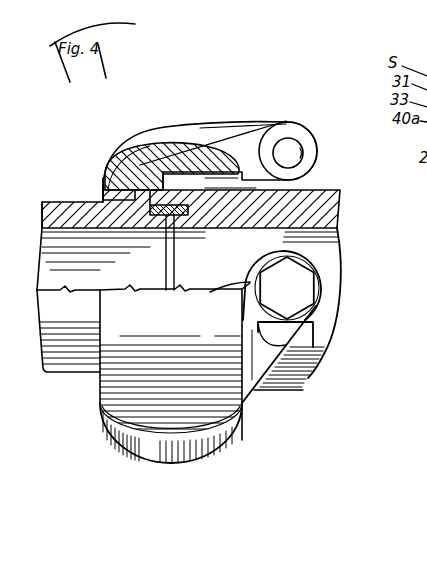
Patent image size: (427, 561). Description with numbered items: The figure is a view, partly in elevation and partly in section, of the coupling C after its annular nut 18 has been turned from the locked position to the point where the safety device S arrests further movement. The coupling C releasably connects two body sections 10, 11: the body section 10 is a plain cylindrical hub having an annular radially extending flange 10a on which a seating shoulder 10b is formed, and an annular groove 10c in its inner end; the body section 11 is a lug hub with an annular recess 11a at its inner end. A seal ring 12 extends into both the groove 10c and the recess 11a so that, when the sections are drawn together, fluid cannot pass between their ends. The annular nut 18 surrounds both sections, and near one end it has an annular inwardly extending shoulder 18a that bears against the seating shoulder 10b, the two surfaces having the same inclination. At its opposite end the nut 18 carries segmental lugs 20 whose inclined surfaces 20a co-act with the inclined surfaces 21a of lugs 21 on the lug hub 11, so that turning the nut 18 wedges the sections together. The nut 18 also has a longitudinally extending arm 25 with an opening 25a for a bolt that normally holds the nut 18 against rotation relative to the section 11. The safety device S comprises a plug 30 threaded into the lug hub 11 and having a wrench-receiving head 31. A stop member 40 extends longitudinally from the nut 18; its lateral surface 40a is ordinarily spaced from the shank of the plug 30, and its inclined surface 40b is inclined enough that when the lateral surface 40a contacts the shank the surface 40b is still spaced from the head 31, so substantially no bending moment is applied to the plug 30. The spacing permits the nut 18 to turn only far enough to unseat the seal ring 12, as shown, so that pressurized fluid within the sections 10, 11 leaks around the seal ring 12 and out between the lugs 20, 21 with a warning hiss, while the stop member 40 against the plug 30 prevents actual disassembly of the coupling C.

The body section 10 is at (62, 208).
The annular radially extending flange 10a is at (179, 140).
The seating shoulder 10b is at (101, 180).
The annular groove 10c is at (162, 222).
The body section 11 is at (340, 186).
The annular recess 11a is at (240, 232).
The seal ring 12 is at (181, 230).
The annular nut 18 is at (160, 140).
The annular inwardly extending shoulder 18a is at (104, 166).
The lugs 20 is at (250, 170).
The inclined surface 20a is at (228, 216).
The lugs 21 is at (195, 150).
The inclined surface 21a is at (220, 168).
The longitudinally extending arm 25 is at (289, 121).
The opening 25a is at (303, 150).
The plug 30 is at (316, 291).
The head 31 is at (300, 272).
The safety device S is at (318, 310).
The coupling C is at (128, 128).
The stop member 40 is at (270, 372).
The lateral surface 40a is at (318, 314).
The inclined surface 40b is at (310, 378).